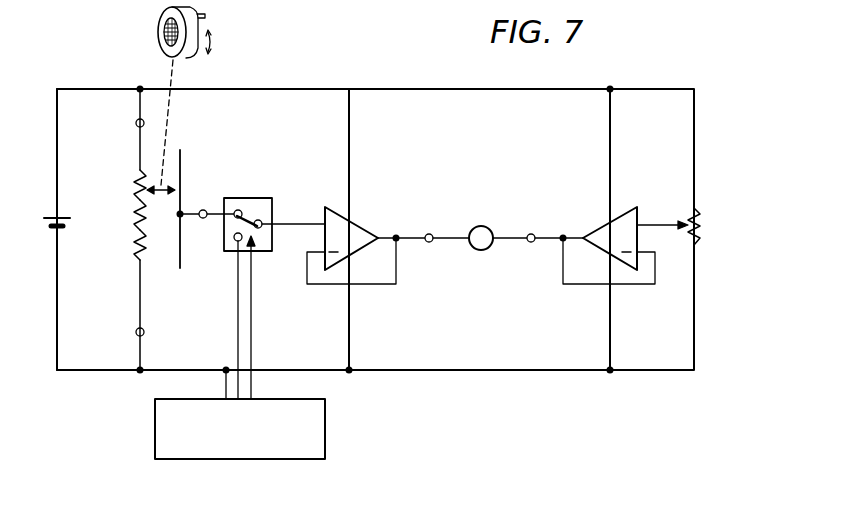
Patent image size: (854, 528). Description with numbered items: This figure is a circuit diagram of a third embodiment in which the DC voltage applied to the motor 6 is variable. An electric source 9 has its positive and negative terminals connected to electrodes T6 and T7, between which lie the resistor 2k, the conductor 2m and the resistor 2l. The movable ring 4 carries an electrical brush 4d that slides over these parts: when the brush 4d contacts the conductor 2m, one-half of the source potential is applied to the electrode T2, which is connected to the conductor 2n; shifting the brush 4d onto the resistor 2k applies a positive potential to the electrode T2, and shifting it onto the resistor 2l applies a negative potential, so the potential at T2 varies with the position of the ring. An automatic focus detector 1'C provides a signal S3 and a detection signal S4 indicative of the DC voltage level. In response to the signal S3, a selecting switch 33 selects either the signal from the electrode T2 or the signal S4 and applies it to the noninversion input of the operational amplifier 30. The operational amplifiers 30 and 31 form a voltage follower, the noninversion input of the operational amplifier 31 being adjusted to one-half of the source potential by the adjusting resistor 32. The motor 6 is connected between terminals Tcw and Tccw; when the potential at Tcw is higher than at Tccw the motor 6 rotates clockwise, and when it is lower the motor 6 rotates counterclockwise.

The movable ring 4 is at (157, 20).
The electric source 9 is at (53, 222).
The electrode T6 is at (136, 123).
The electrode T7 is at (136, 332).
The resistor 2k is at (136, 182).
The conductor 2m is at (136, 214).
The resistor 2l is at (136, 244).
The electrical brush 4d is at (162, 198).
The conductor 2n is at (181, 168).
The electrode T2 is at (204, 208).
The selecting switch 33 is at (257, 196).
The detection signal S4 is at (234, 324).
The signal S3 is at (254, 311).
The automatic focus detector 1'C is at (212, 414).
The operational amplifier 30 is at (366, 224).
The terminal Tcw is at (429, 233).
The motor 6 is at (481, 226).
The terminal Tccw is at (531, 233).
The operational amplifier 31 is at (600, 224).
The adjusting resistor 32 is at (700, 232).